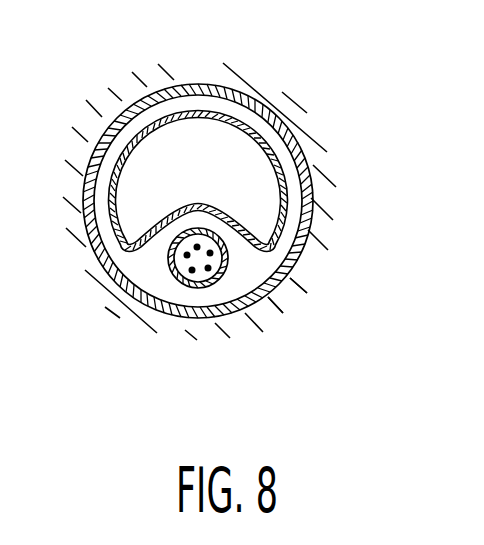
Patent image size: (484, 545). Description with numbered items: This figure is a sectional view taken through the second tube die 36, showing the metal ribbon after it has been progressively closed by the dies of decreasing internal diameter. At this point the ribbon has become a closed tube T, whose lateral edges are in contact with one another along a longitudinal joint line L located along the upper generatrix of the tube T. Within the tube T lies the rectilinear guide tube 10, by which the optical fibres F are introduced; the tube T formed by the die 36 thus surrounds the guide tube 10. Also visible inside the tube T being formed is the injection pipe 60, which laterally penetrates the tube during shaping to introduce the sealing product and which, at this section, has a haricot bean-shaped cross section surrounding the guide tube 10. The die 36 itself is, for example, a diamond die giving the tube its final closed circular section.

The tube die 36 is at (104, 119).
The longitudinal joint line L is at (197, 72).
The closed tube T is at (241, 93).
The optical fibres F is at (199, 257).
The guide tube 10 is at (168, 261).
The injection pipe 60 is at (293, 250).